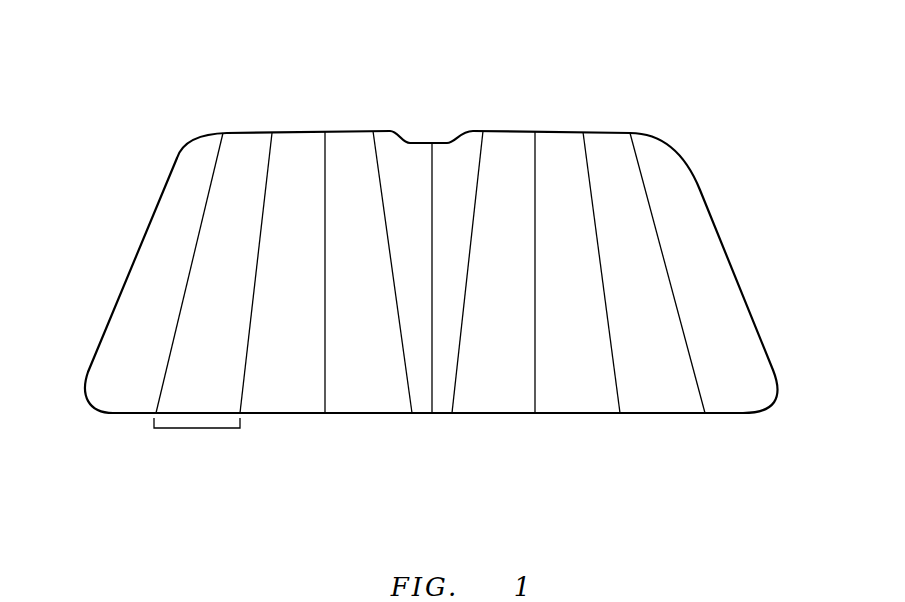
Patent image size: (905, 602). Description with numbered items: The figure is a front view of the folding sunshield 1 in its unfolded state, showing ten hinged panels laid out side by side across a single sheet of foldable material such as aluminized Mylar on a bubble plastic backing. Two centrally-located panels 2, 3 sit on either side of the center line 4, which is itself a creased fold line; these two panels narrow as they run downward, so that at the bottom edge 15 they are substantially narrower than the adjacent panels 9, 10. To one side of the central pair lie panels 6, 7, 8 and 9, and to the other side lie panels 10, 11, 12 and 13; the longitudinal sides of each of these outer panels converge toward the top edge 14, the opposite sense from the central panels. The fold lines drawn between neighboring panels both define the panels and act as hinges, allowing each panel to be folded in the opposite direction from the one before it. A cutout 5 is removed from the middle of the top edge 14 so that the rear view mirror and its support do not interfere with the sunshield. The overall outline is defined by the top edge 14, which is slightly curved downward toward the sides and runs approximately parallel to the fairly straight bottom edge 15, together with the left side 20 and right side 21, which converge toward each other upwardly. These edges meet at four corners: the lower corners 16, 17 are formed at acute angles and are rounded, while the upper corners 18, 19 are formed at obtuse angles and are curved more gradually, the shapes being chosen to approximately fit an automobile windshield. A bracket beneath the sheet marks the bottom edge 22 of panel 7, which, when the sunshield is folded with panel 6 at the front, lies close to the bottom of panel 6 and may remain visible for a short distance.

The folding sunshield 1 is at (308, 69).
The central panel 2 is at (419, 226).
The central panel 3 is at (466, 226).
The center line 4 is at (430, 178).
The cutout 5 is at (430, 116).
The panel 6 is at (166, 313).
The panel 7 is at (234, 313).
The panel 8 is at (302, 313).
The panel 9 is at (367, 313).
The panel 10 is at (482, 312).
The panel 11 is at (549, 312).
The panel 12 is at (627, 312).
The panel 13 is at (692, 312).
The top edge 14 is at (562, 116).
The bottom edge 15 is at (573, 423).
The corner 16 is at (78, 411).
The corner 17 is at (786, 394).
The corner 18 is at (175, 150).
The corner 19 is at (673, 134).
The left side 20 is at (129, 247).
The right side 21 is at (730, 226).
The bottom edge of panel 7 22 is at (200, 428).